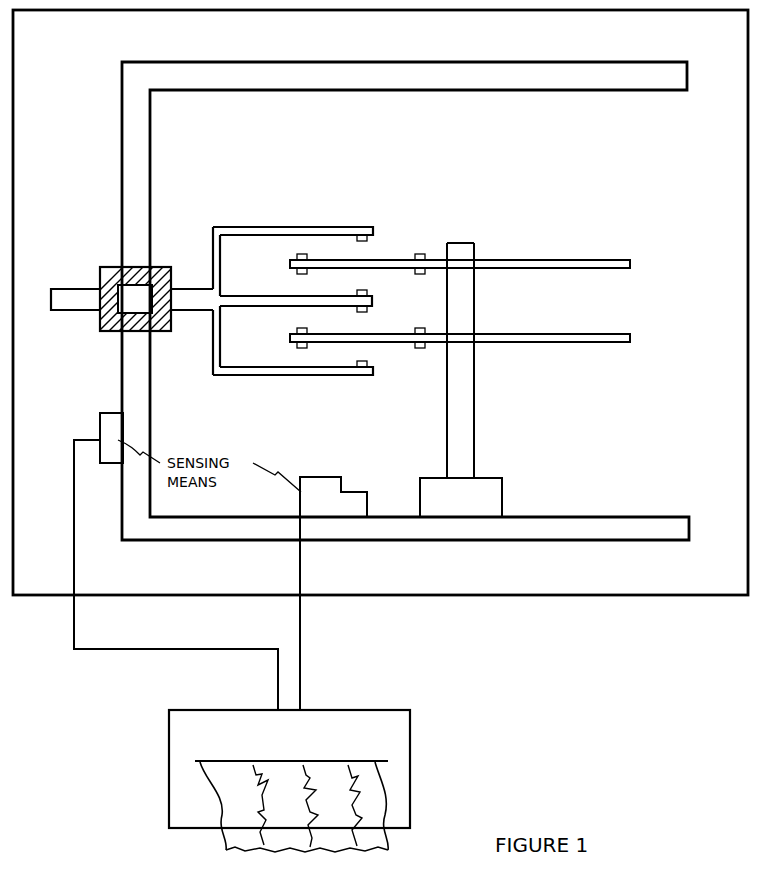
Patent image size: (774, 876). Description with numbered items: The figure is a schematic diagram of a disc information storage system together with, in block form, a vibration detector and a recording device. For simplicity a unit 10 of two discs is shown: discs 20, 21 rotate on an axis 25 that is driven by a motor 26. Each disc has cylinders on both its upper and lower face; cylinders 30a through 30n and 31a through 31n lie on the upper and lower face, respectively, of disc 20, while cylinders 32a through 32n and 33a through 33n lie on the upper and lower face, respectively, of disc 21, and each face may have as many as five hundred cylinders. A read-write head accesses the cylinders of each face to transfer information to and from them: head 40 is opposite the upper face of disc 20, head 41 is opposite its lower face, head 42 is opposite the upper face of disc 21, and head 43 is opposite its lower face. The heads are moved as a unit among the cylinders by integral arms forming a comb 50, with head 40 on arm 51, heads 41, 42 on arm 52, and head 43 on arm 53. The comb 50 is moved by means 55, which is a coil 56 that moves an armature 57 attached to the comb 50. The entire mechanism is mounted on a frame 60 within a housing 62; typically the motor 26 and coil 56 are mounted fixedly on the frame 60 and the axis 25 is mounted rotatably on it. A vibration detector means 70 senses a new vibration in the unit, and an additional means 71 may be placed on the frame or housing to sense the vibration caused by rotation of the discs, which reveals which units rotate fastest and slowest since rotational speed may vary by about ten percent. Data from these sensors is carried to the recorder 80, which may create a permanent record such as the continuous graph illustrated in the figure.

The unit 10 is at (466, 222).
The disc 20 is at (630, 264).
The disc 21 is at (630, 338).
The axis 25 is at (474, 419).
The motor 26 is at (490, 480).
The cylinder 30a is at (301, 256).
The cylinder 31a is at (308, 260).
The cylinder 32a is at (301, 349).
The cylinder 33a is at (307, 349).
The cylinder 30n is at (425, 257).
The cylinder 31n is at (425, 272).
The cylinder 32n is at (425, 331).
The cylinder 33n is at (425, 346).
The head 40 is at (367, 229).
The head 41 is at (368, 293).
The head 42 is at (368, 310).
The head 43 is at (372, 376).
The comb 50 is at (207, 286).
The arm 51 is at (259, 228).
The arm 52 is at (275, 311).
The arm 53 is at (276, 378).
The means 55 is at (177, 330).
The coil 56 is at (106, 263).
The armature 57 is at (66, 300).
The frame 60 is at (576, 524).
The housing 62 is at (380, 304).
The vibration detector means 70 is at (112, 434).
The additional means 71 is at (335, 592).
The recorder 80 is at (412, 752).